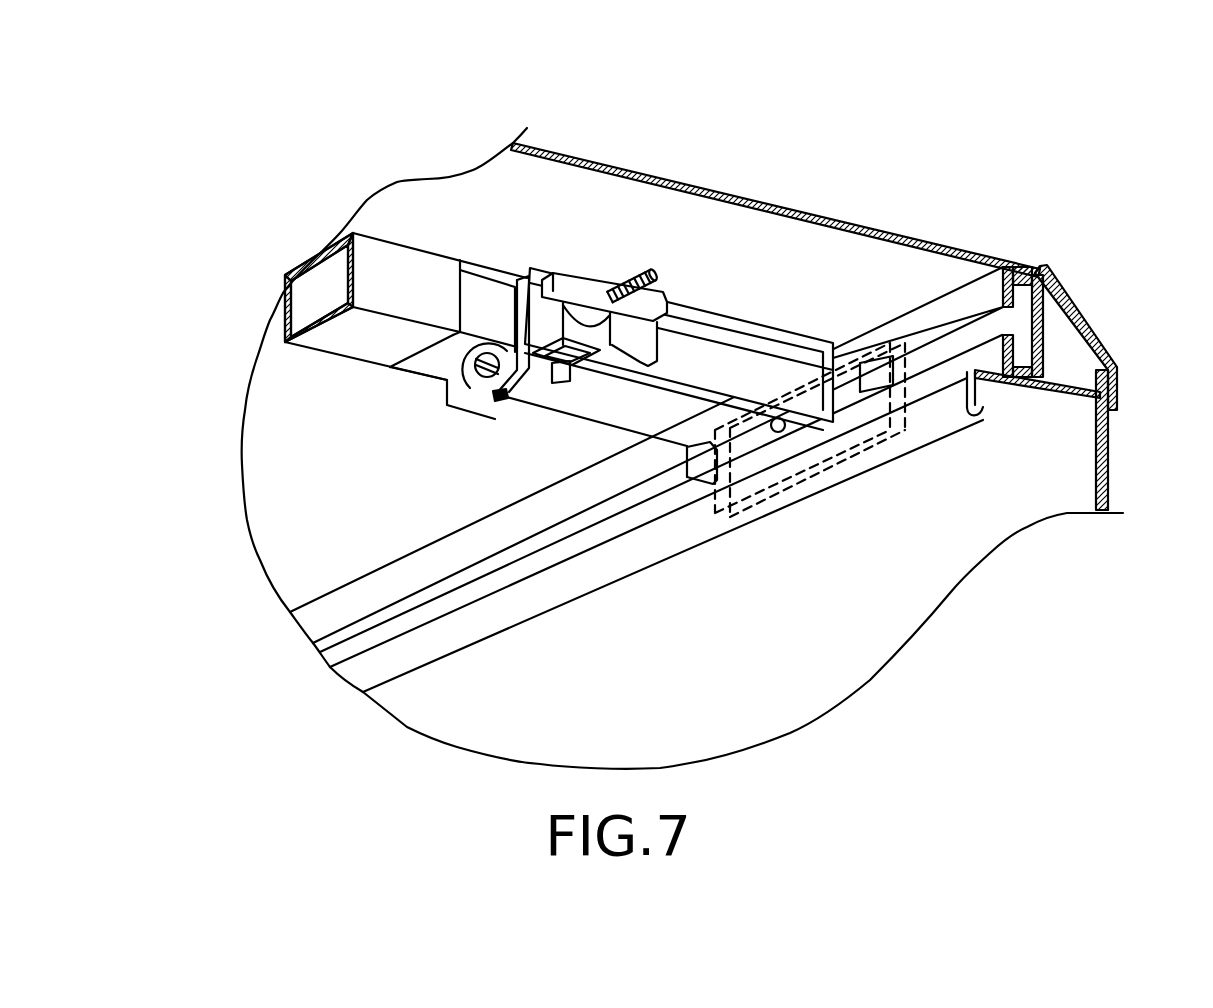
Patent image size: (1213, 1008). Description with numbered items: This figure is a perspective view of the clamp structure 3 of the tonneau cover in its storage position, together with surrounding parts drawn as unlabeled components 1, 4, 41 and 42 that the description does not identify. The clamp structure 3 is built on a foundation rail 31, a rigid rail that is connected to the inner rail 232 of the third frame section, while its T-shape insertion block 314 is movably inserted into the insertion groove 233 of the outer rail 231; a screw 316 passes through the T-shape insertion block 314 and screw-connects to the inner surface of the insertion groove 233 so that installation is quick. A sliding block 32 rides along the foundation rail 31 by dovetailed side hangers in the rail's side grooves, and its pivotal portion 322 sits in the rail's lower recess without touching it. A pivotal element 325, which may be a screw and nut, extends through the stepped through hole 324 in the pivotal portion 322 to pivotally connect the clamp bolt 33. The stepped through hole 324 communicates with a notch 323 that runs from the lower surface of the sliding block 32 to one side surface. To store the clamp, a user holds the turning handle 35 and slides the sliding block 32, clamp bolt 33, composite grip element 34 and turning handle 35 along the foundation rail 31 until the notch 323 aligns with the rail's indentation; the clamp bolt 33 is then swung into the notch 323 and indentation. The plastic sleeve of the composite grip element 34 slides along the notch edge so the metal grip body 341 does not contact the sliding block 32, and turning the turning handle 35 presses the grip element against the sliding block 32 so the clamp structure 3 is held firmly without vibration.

The frame 1 is at (545, 147).
The clamp structure 3 is at (365, 395).
The drawer 4 is at (1136, 452).
The foundation rail 31 is at (740, 380).
The sliding block 32 is at (522, 365).
The clamp bolt 33 is at (685, 243).
The composite grip element 34 is at (554, 250).
The turning handle 35 is at (619, 262).
The drawer side wall 41 is at (1107, 495).
The drawer flange 42 is at (947, 437).
The outer rail 231 is at (1008, 285).
The inner rail 232 is at (313, 345).
The insertion groove 233 is at (1030, 268).
The T-shape insertion block 314 is at (882, 383).
The screw 316 is at (775, 425).
The pivotal portion 322 is at (432, 390).
The notch 323 is at (500, 405).
The stepped through hole 324 is at (462, 390).
The pivotal element 325 is at (487, 378).
The metal grip body 341 is at (590, 335).